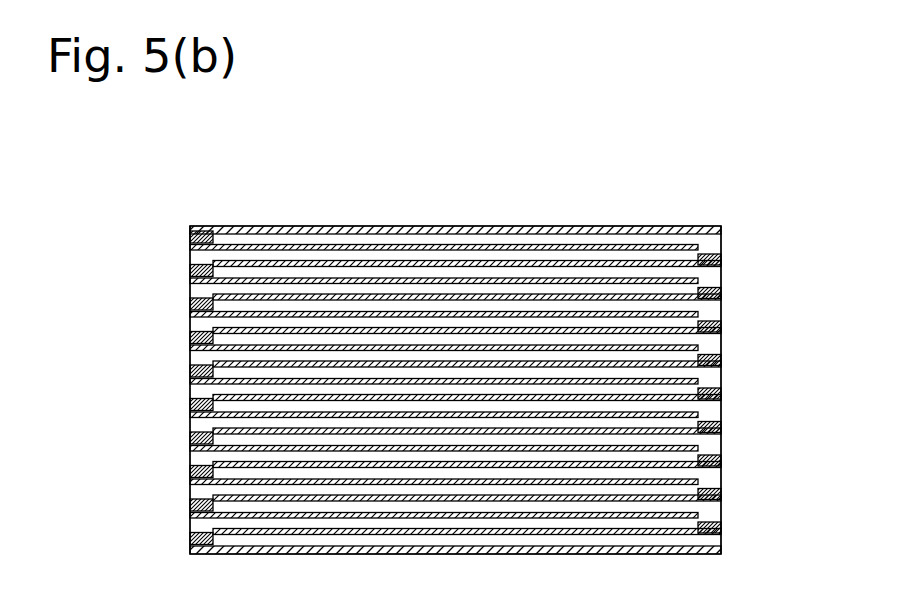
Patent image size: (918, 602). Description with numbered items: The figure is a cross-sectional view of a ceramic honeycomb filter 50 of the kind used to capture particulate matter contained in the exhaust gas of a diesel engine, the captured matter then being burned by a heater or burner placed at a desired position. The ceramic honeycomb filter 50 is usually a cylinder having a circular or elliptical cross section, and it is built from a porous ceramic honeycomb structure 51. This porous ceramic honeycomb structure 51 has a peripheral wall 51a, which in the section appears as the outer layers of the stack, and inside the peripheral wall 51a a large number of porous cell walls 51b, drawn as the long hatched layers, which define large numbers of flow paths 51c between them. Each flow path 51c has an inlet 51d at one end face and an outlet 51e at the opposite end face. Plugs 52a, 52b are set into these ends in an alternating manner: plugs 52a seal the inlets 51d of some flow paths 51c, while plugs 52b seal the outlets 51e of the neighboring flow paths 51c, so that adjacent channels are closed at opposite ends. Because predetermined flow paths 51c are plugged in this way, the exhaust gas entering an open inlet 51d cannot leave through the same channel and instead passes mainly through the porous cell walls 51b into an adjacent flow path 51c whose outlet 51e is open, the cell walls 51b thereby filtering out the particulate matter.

The ceramic honeycomb filter 50 is at (190, 182).
The porous ceramic honeycomb structure 51 is at (616, 227).
The peripheral wall 51a is at (321, 227).
The cell walls 51b is at (406, 280).
The flow paths 51c is at (511, 293).
The inlets 51d is at (181, 321).
The outlets 51e is at (734, 306).
The plugs 52a is at (190, 403).
The plugs 52b is at (722, 425).